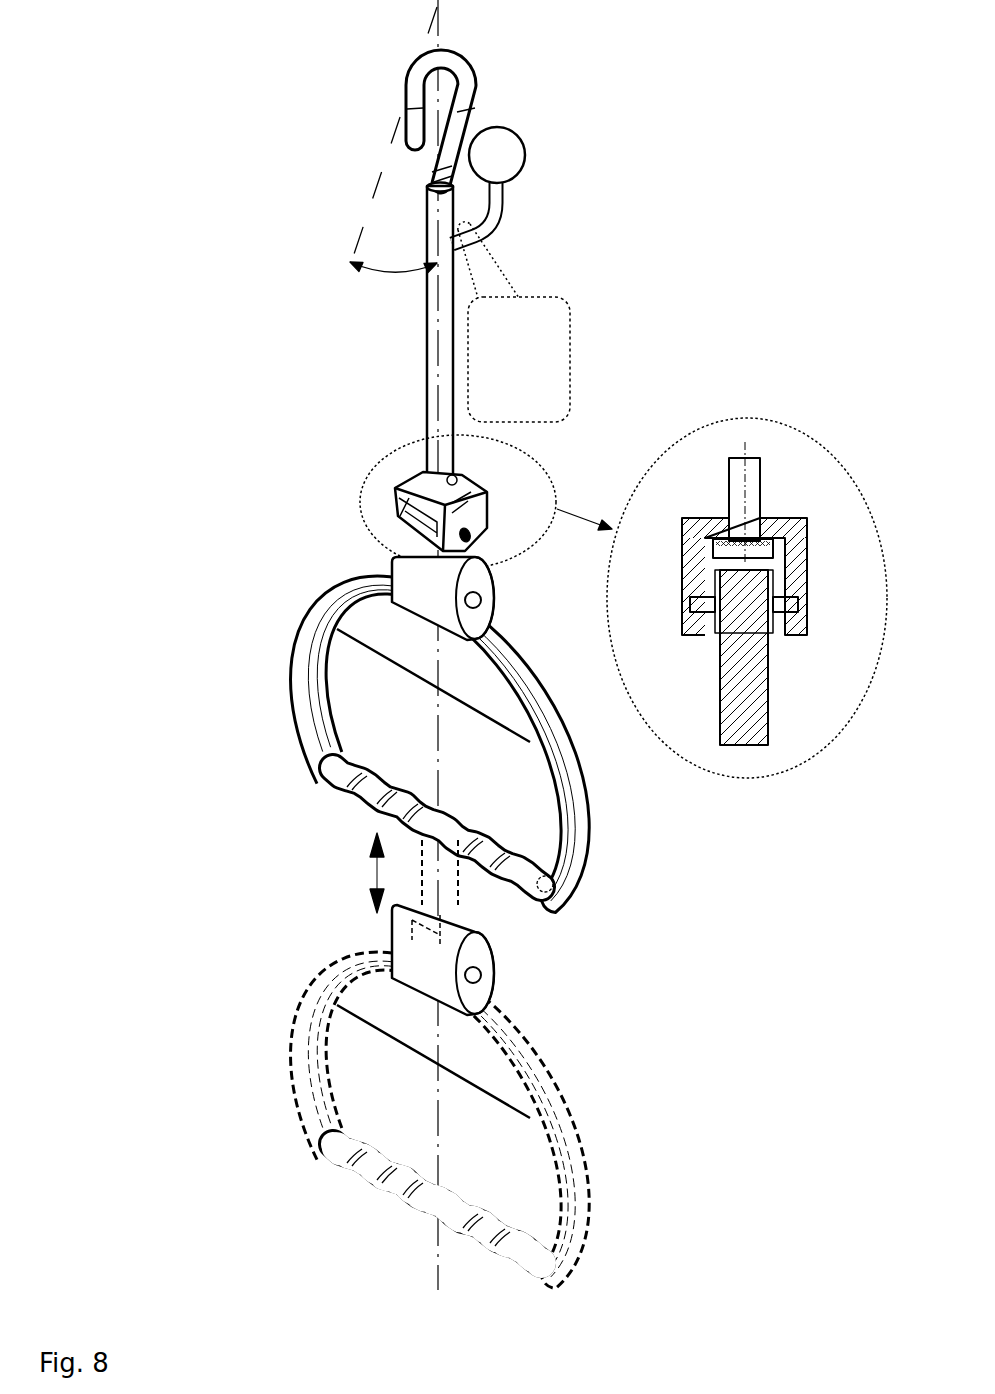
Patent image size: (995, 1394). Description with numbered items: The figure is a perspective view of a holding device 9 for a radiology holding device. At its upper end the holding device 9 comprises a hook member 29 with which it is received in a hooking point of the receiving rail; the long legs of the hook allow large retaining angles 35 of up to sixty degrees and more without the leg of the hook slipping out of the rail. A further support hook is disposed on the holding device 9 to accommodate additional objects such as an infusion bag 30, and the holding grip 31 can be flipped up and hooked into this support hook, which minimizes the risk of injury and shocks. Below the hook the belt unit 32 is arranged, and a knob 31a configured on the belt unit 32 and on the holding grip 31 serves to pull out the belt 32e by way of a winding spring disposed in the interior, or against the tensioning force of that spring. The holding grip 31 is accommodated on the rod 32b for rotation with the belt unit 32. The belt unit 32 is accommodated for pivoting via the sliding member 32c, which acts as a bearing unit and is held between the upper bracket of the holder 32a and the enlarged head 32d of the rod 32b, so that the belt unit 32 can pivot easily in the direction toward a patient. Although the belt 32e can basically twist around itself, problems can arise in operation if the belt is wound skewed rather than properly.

The holding device 9 is at (152, 84).
The hook member 29 is at (462, 70).
The infusion bag 30 is at (571, 382).
The holding grip 31 is at (563, 878).
The knob 31a is at (481, 601).
The belt unit 32 is at (473, 508).
The holder 32a is at (797, 576).
The rod 32b is at (748, 492).
The sliding member 32c is at (722, 540).
The enlarged head 32d is at (718, 553).
The belt 32e is at (758, 668).
The retaining angle 35 is at (387, 272).